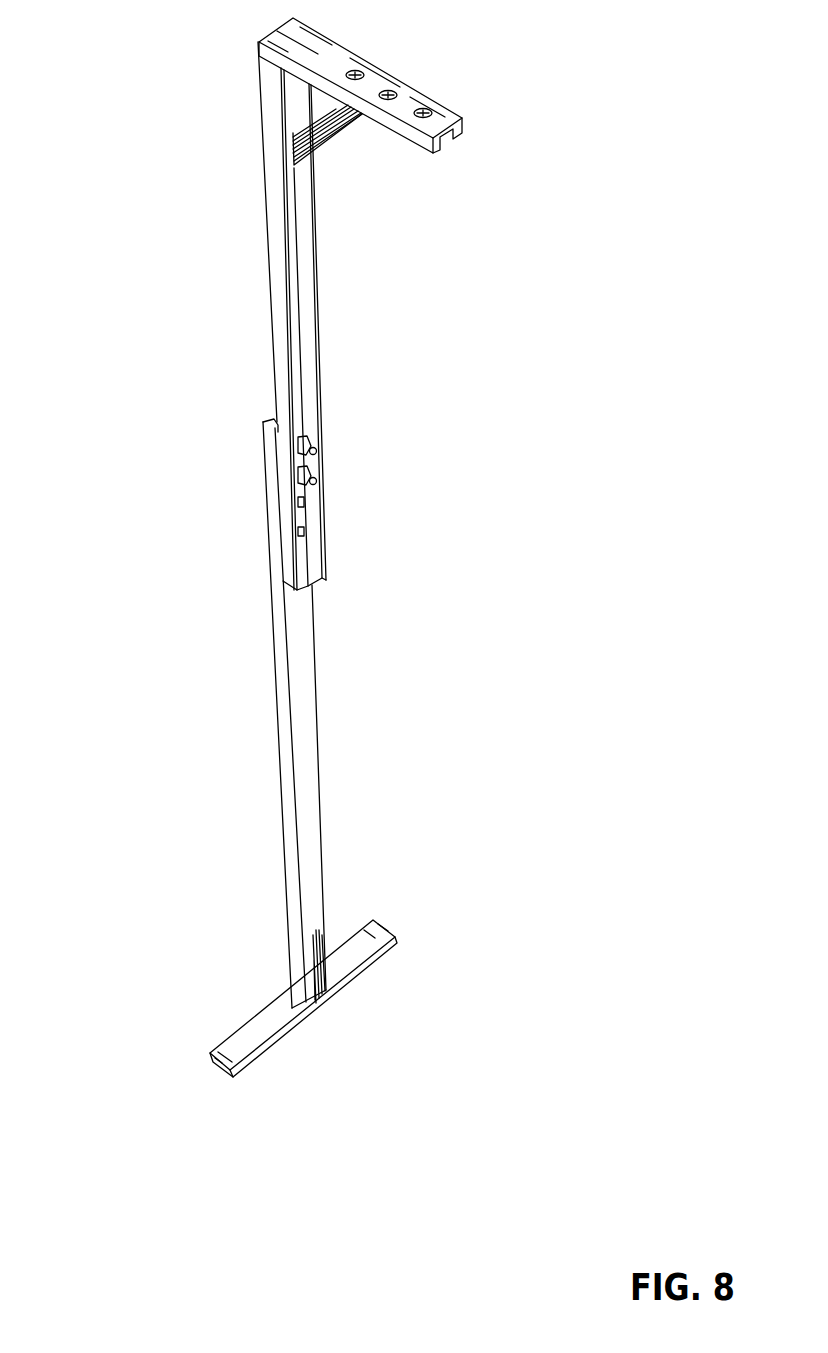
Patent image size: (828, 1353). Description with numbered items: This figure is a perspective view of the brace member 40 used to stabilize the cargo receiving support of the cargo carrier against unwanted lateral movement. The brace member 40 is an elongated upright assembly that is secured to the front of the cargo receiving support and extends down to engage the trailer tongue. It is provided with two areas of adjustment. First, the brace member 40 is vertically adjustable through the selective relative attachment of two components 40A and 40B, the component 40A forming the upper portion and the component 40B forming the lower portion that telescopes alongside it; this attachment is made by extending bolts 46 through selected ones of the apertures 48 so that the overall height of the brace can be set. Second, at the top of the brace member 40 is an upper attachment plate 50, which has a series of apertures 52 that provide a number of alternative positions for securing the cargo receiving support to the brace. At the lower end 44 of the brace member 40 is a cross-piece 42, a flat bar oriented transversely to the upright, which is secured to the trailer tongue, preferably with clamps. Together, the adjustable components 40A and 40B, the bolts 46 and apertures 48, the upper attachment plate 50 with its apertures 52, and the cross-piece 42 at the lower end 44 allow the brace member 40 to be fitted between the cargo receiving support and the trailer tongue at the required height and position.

The brace member 40 is at (269, 546).
The component 40A is at (315, 243).
The component 40B is at (303, 658).
The cross-piece 42 is at (383, 925).
The lower end 44 is at (330, 922).
The bolts 46 is at (315, 482).
The apertures 48 is at (303, 527).
The upper attachment plate 50 is at (312, 58).
The apertures 52 is at (356, 80).